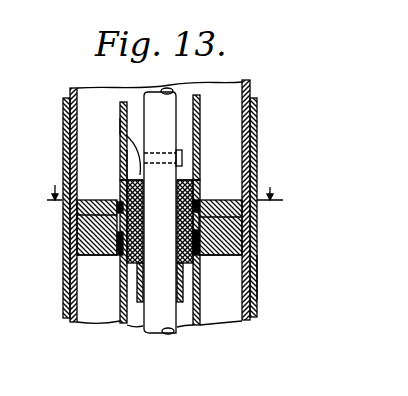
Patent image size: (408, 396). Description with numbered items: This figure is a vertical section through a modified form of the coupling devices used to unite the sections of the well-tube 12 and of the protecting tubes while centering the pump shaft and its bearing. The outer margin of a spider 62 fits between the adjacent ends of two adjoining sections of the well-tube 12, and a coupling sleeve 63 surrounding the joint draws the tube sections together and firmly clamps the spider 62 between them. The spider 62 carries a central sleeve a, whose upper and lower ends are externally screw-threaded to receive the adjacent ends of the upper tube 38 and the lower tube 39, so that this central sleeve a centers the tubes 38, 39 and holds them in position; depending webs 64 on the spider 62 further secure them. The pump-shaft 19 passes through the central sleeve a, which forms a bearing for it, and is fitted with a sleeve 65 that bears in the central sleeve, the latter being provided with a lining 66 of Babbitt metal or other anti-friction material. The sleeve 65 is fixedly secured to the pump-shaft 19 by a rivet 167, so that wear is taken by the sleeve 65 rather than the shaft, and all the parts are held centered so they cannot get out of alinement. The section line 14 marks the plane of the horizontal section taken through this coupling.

The well-tube 12 is at (251, 91).
The pump-shaft 19 is at (156, 102).
The tube 38 is at (200, 132).
The tube 39 is at (200, 305).
The rivet 167 is at (182, 162).
The lining 66 is at (123, 197).
The spider 62 is at (217, 201).
The depending webs 64 is at (102, 248).
The sleeve 65 is at (120, 128).
The central sleeve a is at (124, 134).
The coupling sleeve 63 is at (125, 170).
The section line 14 is at (165, 197).